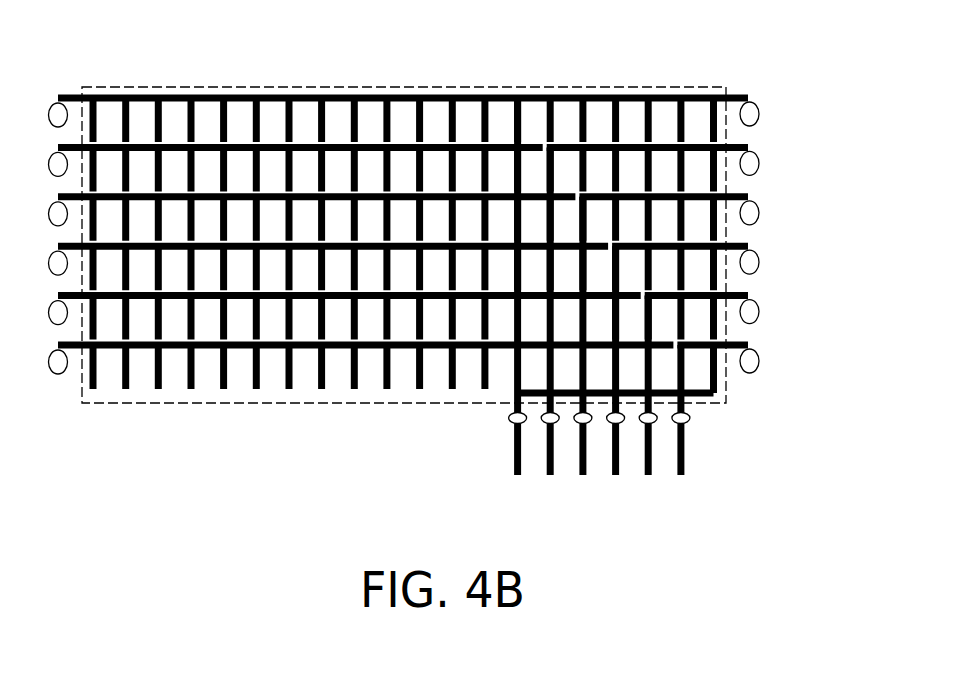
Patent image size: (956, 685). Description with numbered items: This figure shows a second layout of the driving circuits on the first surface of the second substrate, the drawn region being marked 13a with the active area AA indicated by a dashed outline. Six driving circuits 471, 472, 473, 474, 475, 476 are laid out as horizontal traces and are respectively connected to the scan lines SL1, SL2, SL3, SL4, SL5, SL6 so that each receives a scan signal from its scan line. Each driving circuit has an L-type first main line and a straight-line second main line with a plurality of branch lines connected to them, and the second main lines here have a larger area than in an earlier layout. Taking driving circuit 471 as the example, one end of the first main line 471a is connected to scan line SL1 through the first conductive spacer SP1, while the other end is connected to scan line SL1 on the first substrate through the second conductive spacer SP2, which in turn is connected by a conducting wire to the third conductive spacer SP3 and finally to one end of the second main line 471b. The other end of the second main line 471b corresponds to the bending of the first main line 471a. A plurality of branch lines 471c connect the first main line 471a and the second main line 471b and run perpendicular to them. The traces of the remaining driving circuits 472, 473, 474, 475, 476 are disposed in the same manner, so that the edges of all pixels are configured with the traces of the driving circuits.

The touch sensor layer 13a is at (855, 63).
The active area AA is at (113, 86).
The driving circuit 471 is at (470, 73).
The driving circuit 472 is at (776, 152).
The driving circuit 473 is at (776, 202).
The driving circuit 474 is at (776, 251).
The driving circuit 475 is at (776, 301).
The driving circuit 476 is at (776, 350).
The first main line 471a is at (668, 95).
The second main line 471b is at (277, 95).
The branch lines 471c is at (197, 120).
The scan line SL1 is at (519, 303).
The scan line SL2 is at (550, 341).
The scan line SL3 is at (583, 353).
The scan line SL4 is at (615, 391).
The scan line SL5 is at (648, 402).
The scan line SL6 is at (680, 440).
The first conductive spacer SP1 is at (495, 427).
The second conductive spacer SP2 is at (752, 399).
The third conductive spacer SP3 is at (56, 395).